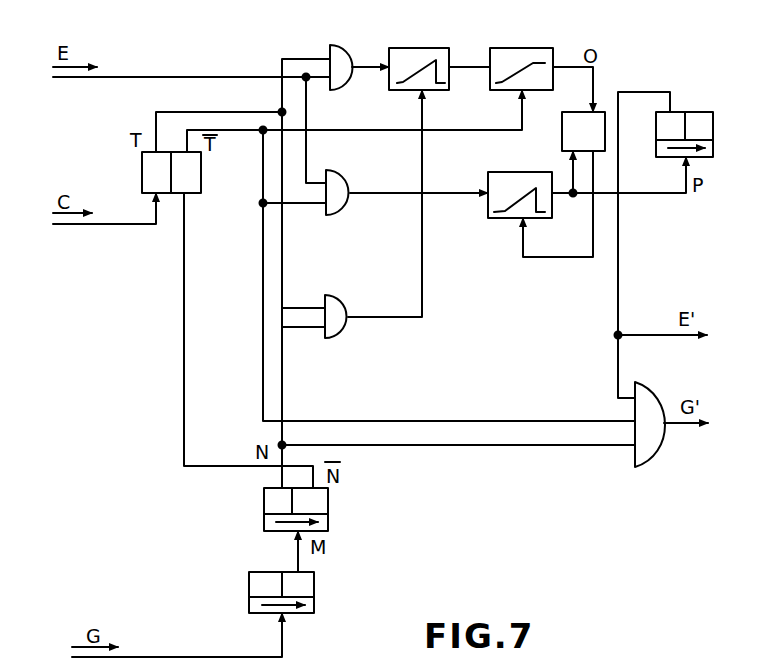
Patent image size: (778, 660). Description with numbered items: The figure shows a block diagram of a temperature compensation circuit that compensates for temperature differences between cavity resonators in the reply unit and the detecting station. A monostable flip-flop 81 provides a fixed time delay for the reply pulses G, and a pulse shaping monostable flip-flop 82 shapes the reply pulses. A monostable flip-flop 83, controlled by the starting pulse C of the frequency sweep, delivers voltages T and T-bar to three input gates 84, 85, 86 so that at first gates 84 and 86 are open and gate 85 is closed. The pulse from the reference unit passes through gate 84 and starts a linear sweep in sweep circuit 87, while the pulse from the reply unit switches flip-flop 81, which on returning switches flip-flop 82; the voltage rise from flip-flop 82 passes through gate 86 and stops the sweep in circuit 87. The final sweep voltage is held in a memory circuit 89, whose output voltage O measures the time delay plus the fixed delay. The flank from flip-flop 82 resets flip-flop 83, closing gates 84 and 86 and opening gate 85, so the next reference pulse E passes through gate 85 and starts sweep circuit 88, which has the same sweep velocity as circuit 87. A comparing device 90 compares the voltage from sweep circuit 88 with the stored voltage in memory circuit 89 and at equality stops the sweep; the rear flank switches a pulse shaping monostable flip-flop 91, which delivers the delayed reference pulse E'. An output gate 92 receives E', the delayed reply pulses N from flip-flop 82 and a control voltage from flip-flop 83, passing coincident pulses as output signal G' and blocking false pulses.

The monostable flip-flop 81 is at (308, 588).
The pulse shaping monostable flip-flop 82 is at (318, 506).
The monostable flip-flop 83 is at (148, 170).
The input gate 84 is at (337, 58).
The input gate 85 is at (337, 183).
The input gate 86 is at (333, 310).
The sweep circuit 87 is at (407, 56).
The sweep circuit 88 is at (493, 180).
The memory circuit 89 is at (506, 60).
The comparing device 90 is at (596, 118).
The pulse shaping monostable flip-flop 91 is at (698, 122).
The output gate 92 is at (642, 400).